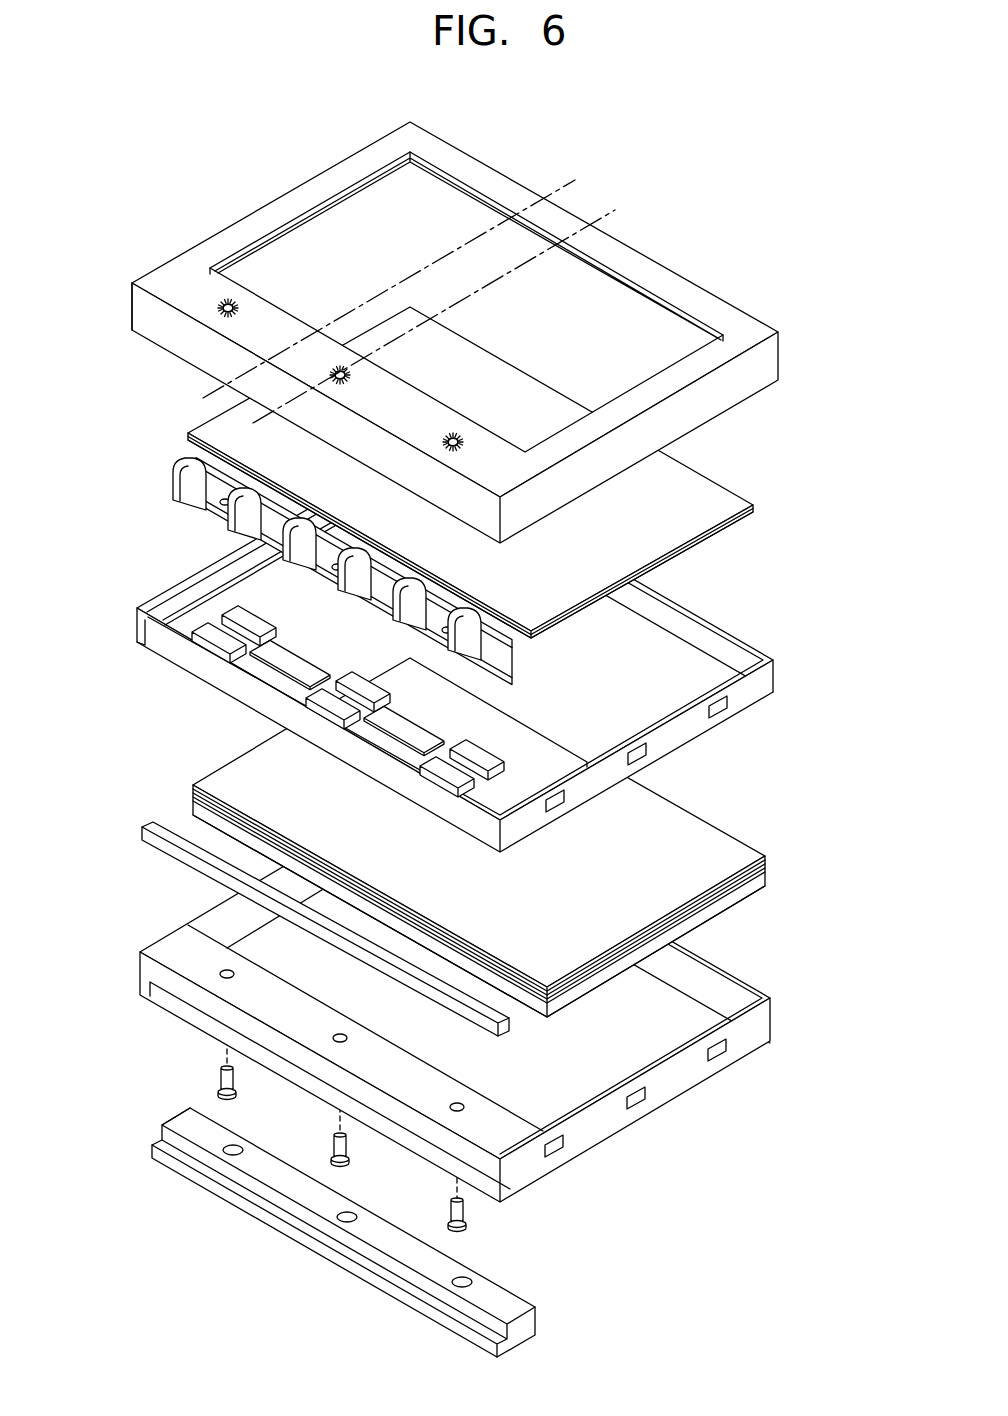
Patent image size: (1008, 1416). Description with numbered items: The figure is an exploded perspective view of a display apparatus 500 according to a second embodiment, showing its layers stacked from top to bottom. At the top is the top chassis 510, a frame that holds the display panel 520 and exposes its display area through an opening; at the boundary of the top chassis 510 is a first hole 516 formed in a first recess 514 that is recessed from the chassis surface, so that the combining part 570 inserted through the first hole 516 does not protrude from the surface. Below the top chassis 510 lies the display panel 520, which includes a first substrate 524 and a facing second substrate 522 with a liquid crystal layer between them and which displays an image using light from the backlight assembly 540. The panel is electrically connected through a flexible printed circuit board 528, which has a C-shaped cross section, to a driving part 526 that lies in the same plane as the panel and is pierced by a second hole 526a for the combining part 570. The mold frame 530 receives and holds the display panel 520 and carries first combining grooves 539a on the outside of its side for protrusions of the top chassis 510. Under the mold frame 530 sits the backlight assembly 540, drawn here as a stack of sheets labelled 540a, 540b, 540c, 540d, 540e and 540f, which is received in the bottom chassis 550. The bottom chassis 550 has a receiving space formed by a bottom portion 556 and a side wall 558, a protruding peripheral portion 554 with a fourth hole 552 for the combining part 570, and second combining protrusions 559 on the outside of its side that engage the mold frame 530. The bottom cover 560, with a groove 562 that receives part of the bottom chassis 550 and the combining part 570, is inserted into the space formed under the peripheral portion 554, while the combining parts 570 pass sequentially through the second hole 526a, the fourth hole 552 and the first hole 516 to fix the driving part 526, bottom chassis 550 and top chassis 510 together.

The display apparatus 500 is at (689, 207).
The top chassis 510 is at (477, 332).
The first recess 514 is at (220, 306).
The first hole 516 is at (216, 310).
The display panel 520 is at (521, 472).
The second substrate 522 is at (754, 505).
The first substrate 524 is at (754, 512).
The driving part 526 is at (333, 570).
The second hole 526a is at (226, 498).
The flexible printed circuit board 528 is at (186, 494).
The mold frame 530 is at (495, 651).
The first combining groove 539a is at (726, 718).
The backlight assembly 540 is at (467, 835).
The first optical sheet 540a is at (191, 788).
The second optical sheet 540b is at (191, 792).
The third optical sheet 540c is at (191, 796).
The light guide plate 540d is at (768, 870).
The reflective bar 540e is at (143, 835).
The reflective sheet 540f is at (768, 885).
The bottom chassis 550 is at (474, 996).
The fourth hole 552 is at (226, 972).
The peripheral portion 554 is at (172, 950).
The bottom portion 556 is at (613, 1050).
The side wall 558 is at (727, 995).
The second combining protrusion 559 is at (726, 1060).
The bottom cover 560 is at (390, 1232).
The groove 562 is at (463, 1277).
The combining part 570 is at (216, 1082).